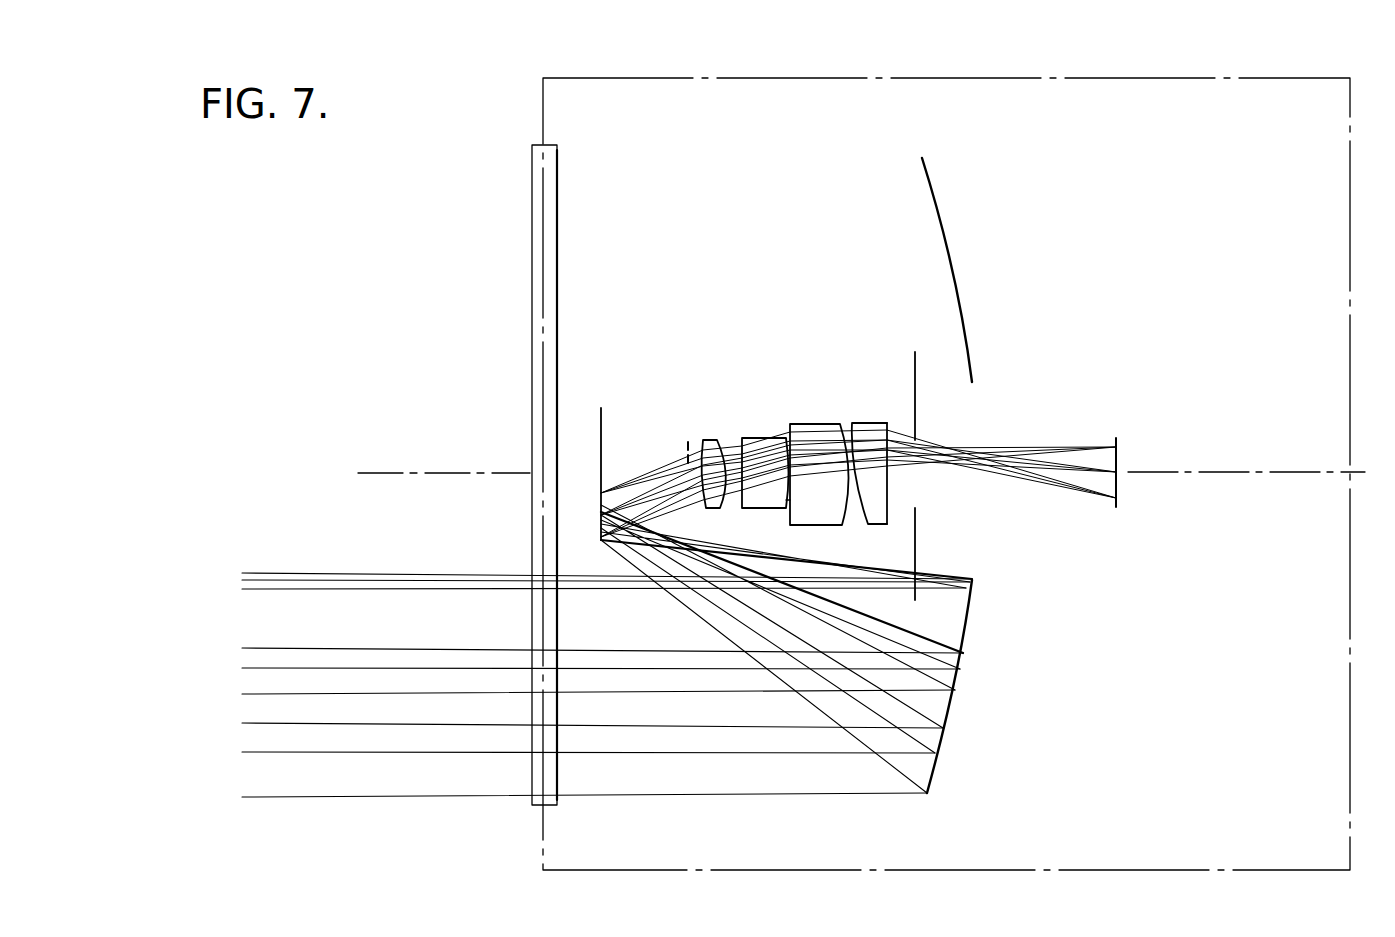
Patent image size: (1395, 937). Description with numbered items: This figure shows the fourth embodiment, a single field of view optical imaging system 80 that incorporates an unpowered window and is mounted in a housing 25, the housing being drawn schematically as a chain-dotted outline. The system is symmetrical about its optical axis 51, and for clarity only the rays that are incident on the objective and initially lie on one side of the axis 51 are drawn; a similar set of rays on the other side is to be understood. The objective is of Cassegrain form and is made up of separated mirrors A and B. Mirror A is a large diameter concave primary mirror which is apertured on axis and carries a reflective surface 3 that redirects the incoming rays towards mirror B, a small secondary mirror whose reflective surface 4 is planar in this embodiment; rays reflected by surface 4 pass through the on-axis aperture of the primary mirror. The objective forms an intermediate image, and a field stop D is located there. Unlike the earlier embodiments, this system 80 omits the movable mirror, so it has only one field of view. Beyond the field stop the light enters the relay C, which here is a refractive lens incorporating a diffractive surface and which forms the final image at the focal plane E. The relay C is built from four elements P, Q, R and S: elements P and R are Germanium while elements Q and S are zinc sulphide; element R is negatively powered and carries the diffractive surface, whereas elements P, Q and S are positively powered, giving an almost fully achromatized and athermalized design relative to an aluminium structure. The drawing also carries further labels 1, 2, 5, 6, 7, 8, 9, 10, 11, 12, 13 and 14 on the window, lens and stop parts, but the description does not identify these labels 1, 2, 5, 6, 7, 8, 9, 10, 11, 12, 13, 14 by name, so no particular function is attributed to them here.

The transparent plate / window 1 is at (528, 175).
The reflecting surface of plate 2 is at (558, 208).
The reflective surface 3 is at (928, 178).
The reflective surface 4 is at (602, 436).
The focused light beam 5 is at (628, 553).
The first lens 6 is at (720, 508).
The second lens 7 is at (733, 437).
The lens spacing 8 is at (786, 500).
The third lens 9 is at (788, 426).
The lens mount 10 is at (857, 512).
The fourth lens 11 is at (860, 424).
The baffle plate lower part 12 is at (915, 508).
The baffle plate upper part 13 is at (917, 488).
The image plane / detector 14 is at (1118, 461).
The housing 25 is at (1262, 75).
The optical axis 51 is at (383, 473).
The single field of view system 80 is at (1103, 215).
The primary mirror A is at (915, 152).
The secondary mirror B is at (600, 405).
The relay C is at (878, 322).
The field stop D is at (687, 425).
The focal plane E is at (1118, 434).
The lens element P is at (712, 425).
The lens element Q is at (761, 422).
The lens element R is at (818, 422).
The lens element S is at (875, 419).